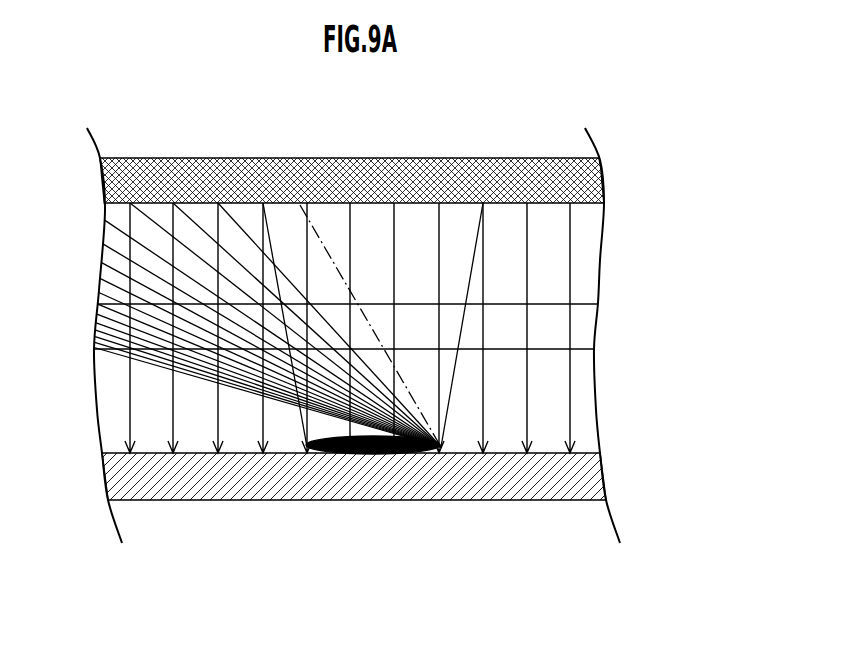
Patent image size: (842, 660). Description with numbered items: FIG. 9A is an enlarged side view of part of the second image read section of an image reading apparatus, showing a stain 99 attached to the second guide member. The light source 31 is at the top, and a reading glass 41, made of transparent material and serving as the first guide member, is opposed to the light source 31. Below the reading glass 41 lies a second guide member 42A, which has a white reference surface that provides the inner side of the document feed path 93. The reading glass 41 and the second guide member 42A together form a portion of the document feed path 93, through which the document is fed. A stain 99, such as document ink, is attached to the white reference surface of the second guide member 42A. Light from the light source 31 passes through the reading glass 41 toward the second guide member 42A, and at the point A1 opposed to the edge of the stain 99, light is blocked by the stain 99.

The light source 31 is at (587, 182).
The reading glass 41 is at (583, 330).
The document feed path 93 is at (586, 410).
The second guide member 42A is at (588, 480).
The stain 99 is at (372, 453).
The point A1 is at (444, 453).